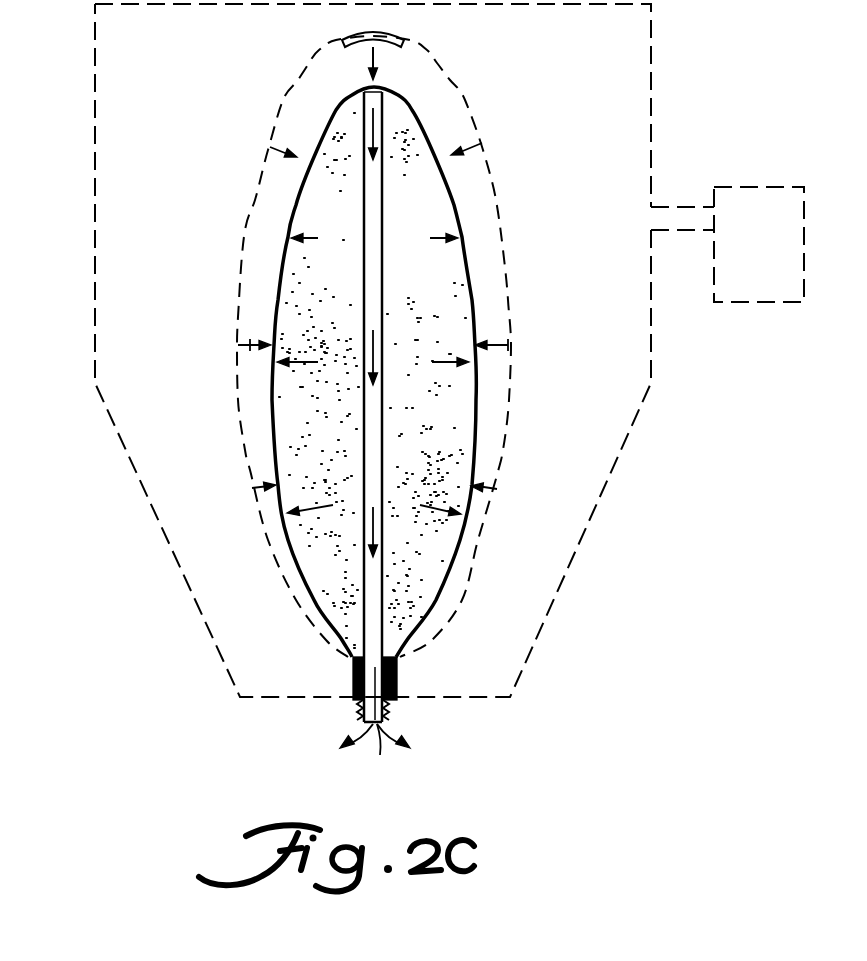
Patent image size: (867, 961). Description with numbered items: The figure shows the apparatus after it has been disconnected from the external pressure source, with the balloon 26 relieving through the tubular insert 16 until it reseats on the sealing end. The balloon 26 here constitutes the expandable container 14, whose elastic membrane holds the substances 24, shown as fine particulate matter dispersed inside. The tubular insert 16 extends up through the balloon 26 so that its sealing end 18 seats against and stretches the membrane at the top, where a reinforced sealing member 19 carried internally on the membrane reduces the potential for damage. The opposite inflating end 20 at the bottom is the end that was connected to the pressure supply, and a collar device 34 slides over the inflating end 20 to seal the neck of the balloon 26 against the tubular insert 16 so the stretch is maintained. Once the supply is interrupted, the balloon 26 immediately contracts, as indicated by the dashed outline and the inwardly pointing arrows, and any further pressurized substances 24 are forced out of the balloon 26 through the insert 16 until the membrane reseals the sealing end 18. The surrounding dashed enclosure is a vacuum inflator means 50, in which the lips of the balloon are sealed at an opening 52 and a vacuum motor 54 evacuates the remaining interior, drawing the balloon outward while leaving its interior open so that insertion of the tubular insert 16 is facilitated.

The expandable container 14 is at (350, 400).
The tubular insert 16 is at (371, 289).
The sealing end 18 is at (384, 95).
The reinforced sealing member 19 is at (344, 37).
The inflating end 20 is at (380, 756).
The substances 24 is at (440, 478).
The balloon 26 is at (276, 300).
The collar device 34 is at (396, 680).
The vacuum inflator means 50 is at (95, 195).
The opening 52 is at (397, 697).
The vacuum motor 54 is at (779, 259).